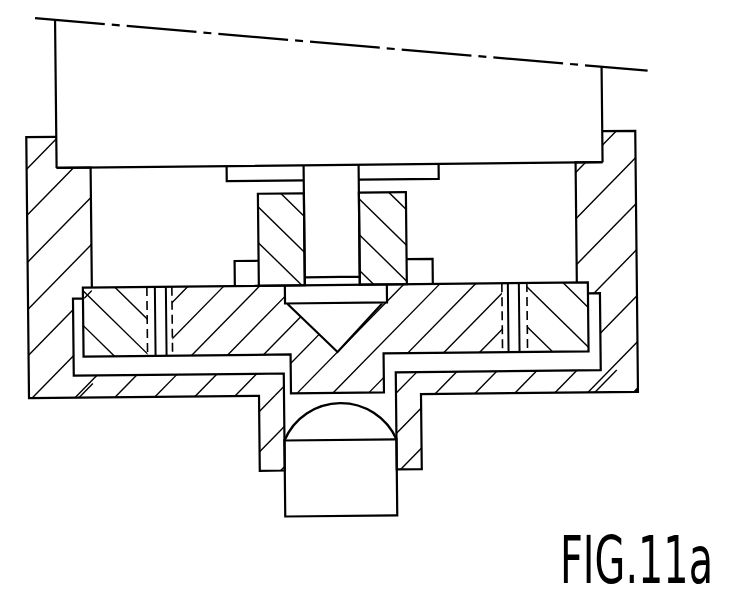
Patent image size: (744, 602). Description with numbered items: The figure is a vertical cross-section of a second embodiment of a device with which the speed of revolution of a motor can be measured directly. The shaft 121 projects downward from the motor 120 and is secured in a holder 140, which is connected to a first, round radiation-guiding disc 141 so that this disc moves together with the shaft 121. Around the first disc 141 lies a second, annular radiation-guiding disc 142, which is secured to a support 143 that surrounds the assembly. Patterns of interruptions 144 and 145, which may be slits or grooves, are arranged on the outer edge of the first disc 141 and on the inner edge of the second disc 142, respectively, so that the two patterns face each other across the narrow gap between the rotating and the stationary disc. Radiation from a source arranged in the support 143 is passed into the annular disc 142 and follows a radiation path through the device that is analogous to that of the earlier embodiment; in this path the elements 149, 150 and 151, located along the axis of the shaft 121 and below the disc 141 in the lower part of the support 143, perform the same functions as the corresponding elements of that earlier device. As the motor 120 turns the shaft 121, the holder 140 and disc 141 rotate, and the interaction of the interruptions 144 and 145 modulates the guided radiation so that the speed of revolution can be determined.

The motor 120 is at (587, 107).
The shaft 121 is at (323, 202).
The holder 140 is at (272, 228).
The first radiation-guiding disc 141 is at (485, 335).
The second annular radiation-guiding disc 142 is at (572, 340).
The support 143 is at (615, 338).
The pattern of interruptions 144 is at (492, 352).
The pattern of interruptions 145 is at (530, 342).
The radiation path element 149 is at (317, 313).
The radiation path element 150 is at (327, 415).
The radiation path element 151 is at (378, 490).